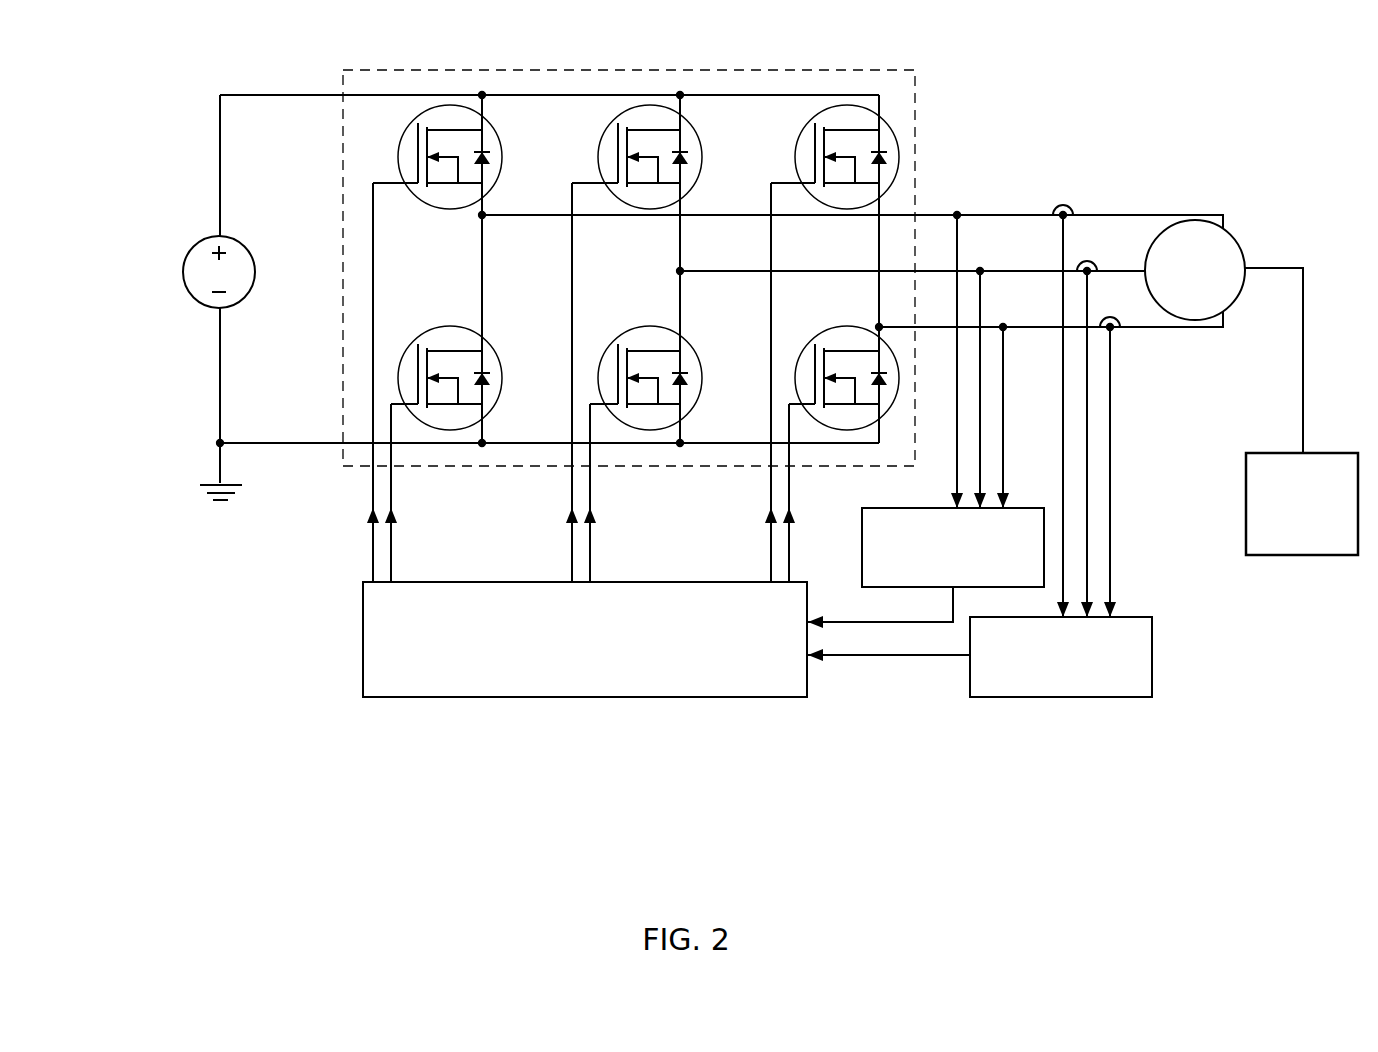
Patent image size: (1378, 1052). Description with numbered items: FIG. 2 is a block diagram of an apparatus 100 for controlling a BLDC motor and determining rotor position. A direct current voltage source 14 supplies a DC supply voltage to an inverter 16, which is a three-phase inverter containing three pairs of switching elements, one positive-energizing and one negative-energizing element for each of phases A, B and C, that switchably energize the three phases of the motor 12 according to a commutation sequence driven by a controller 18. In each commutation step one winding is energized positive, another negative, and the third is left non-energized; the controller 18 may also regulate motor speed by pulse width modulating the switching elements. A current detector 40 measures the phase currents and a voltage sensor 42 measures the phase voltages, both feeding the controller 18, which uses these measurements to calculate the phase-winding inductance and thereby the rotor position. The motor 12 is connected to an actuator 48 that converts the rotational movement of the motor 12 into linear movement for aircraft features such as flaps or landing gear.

The apparatus 100 is at (148, 84).
The BLDC motor 12 is at (1243, 251).
The direct current voltage source 14 is at (204, 241).
The inverter 16 is at (577, 63).
The controller 18 is at (512, 580).
The current detector 40 is at (1068, 697).
The voltage sensor 42 is at (931, 506).
The actuator 48 is at (1302, 504).